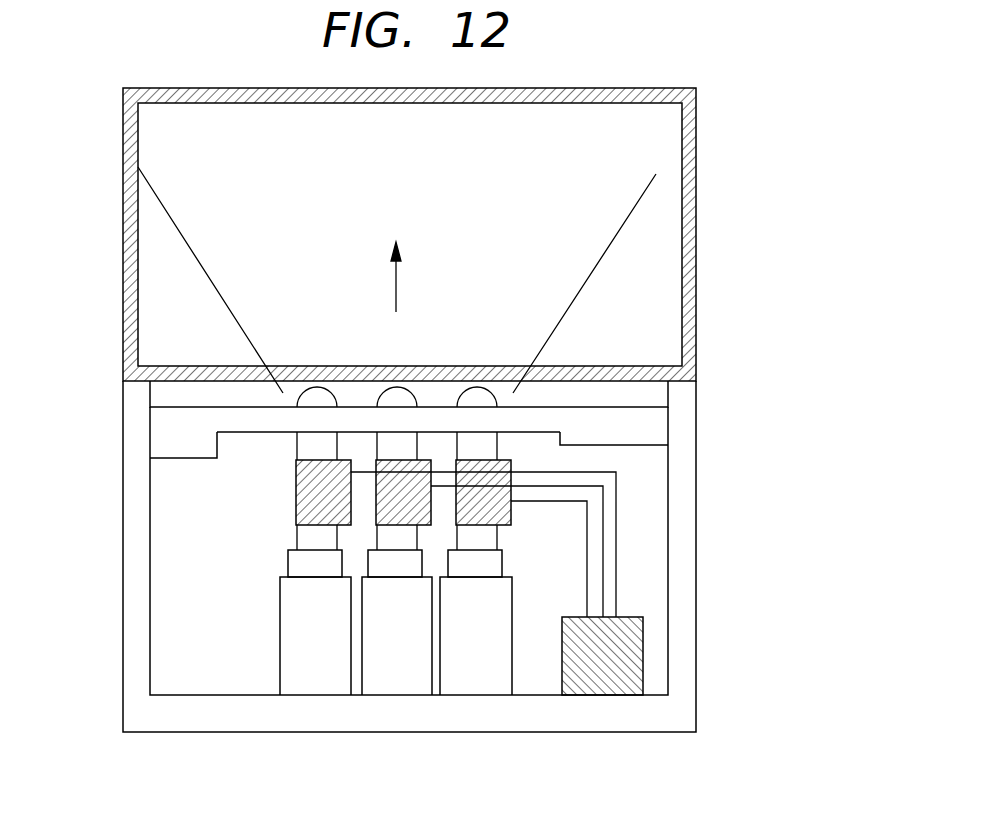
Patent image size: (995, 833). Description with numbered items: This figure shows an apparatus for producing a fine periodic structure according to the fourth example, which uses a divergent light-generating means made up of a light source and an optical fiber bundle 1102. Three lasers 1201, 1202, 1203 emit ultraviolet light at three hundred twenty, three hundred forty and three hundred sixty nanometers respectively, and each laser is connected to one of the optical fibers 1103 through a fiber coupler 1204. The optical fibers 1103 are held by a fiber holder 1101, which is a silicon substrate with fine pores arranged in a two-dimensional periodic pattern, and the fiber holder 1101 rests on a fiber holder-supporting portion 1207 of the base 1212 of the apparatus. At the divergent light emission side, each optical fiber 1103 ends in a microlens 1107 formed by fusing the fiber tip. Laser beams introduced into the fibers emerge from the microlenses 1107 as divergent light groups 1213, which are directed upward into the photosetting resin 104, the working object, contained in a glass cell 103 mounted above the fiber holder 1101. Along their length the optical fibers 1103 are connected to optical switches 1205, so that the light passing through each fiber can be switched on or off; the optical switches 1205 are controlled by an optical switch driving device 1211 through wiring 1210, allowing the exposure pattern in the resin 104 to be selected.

The glass cell 103 is at (688, 131).
The photosetting resin 104 is at (168, 134).
The divergent light groups 1213 is at (455, 295).
The base 1212 is at (683, 448).
The support member 1207 is at (167, 443).
The fiber holder 1101 is at (227, 419).
The microlenses 1107 is at (318, 396).
The optical fibers 1103 is at (297, 447).
The optical fiber bundle 1102 is at (507, 448).
The optical switches 1205 is at (297, 500).
The fiber couplers 1204 is at (300, 562).
The laser 1201 is at (312, 685).
The laser 1202 is at (396, 685).
The laser 1203 is at (480, 685).
The wiring 1210 is at (618, 592).
The optical switch driving device 1211 is at (630, 660).